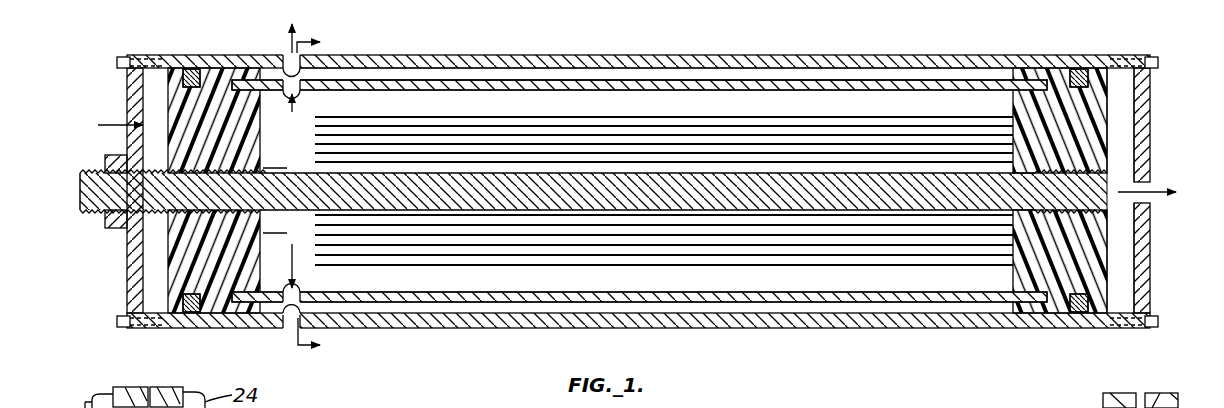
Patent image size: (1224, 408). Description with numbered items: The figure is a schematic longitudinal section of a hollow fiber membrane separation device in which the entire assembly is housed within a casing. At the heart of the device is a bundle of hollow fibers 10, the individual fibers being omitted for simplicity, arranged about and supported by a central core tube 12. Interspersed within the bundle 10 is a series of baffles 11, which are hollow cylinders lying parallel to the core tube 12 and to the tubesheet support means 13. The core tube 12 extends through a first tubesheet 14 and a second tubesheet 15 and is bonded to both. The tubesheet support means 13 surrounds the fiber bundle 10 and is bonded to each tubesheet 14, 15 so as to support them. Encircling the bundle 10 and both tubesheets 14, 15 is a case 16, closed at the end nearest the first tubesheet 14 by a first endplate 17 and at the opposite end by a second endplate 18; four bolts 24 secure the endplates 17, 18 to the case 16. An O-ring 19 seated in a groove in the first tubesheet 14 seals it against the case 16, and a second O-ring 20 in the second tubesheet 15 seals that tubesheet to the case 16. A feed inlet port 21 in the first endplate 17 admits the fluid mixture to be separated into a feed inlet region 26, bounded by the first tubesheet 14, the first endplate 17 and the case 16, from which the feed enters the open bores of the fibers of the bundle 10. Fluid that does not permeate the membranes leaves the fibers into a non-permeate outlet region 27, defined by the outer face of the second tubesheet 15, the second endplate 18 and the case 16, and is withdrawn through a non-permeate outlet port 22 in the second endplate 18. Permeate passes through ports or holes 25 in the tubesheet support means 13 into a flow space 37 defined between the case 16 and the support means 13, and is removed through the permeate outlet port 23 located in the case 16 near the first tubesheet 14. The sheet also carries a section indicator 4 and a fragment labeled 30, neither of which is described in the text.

The hollow fiber bundle 10 is at (275, 191).
The baffles 11 is at (827, 117).
The core tube 12 is at (90, 214).
The tubesheet support means 13 is at (527, 84).
The first tubesheet 14 is at (170, 259).
The second tubesheet 15 is at (1098, 229).
The case 16 is at (640, 58).
The first endplate 17 is at (133, 78).
The second endplate 18 is at (1140, 115).
The O-ring 19 is at (193, 70).
The second O-ring 20 is at (1077, 68).
The feed inlet port 21 is at (130, 120).
The non-permeate outlet port 22 is at (1152, 185).
The permeate outlet port 23 is at (288, 52).
The bolts 24 is at (118, 61).
The ports or holes 25 is at (283, 60).
The feed inlet region 26 is at (158, 150).
The non-permeate outlet region 27 is at (1122, 273).
The element of adjacent figure 30 is at (1100, 398).
The flow space 37 is at (418, 76).
The section line 4 is at (324, 197).